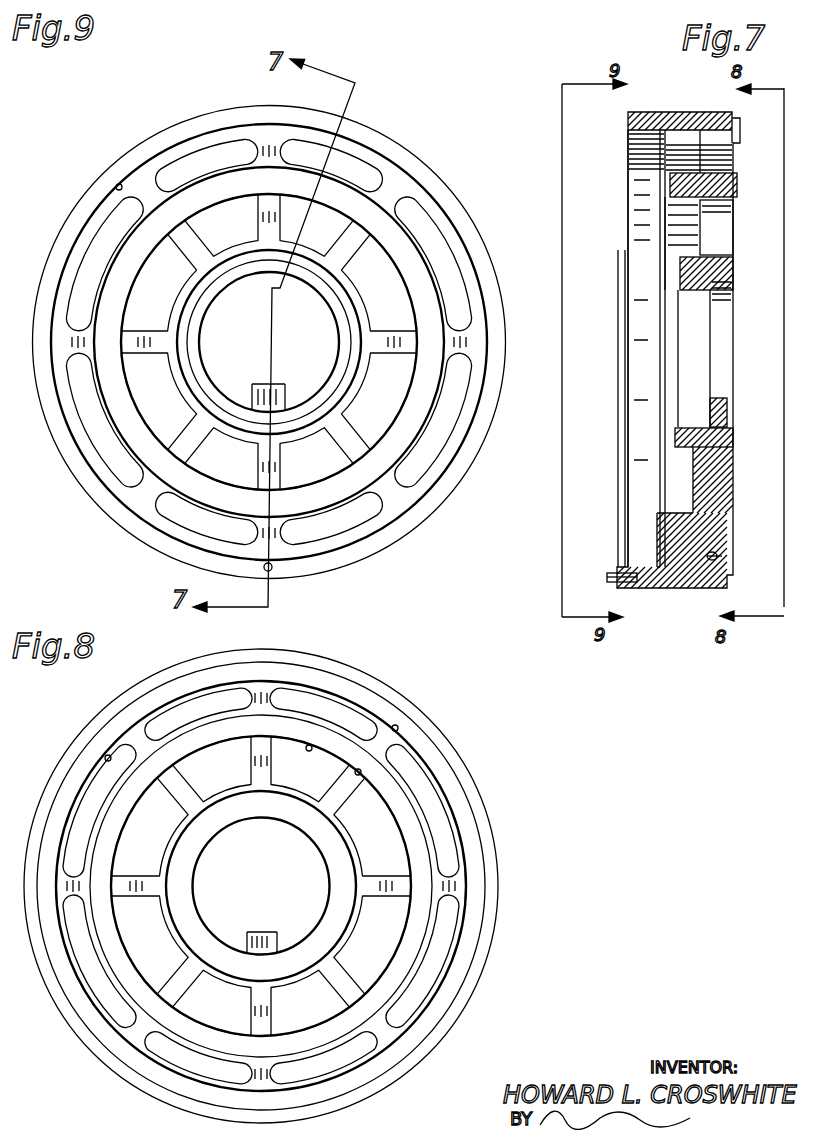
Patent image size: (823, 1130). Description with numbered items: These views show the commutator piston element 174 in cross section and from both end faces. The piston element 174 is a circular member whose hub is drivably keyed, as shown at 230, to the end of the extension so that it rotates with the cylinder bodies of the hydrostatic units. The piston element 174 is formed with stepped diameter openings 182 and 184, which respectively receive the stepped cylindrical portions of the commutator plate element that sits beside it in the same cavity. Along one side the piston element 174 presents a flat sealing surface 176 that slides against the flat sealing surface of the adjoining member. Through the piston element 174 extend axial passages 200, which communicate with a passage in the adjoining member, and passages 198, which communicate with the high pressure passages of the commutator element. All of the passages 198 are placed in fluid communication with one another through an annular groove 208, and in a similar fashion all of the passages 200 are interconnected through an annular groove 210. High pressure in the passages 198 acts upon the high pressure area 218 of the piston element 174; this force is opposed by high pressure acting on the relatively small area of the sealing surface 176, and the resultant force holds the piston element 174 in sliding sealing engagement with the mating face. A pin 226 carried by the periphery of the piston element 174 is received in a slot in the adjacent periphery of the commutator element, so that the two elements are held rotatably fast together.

In FIG. 9, the commutator piston element 174 is at (269, 342).
In FIG. 8, the commutator piston element 174 is at (256, 886).
In FIG. 7, the commutator piston element 174 is at (703, 122).
In FIG. 8, the sealing surface 176 is at (288, 886).
In FIG. 7, the sealing surface 176 is at (758, 128).
In FIG. 9, the stepped diameter opening 182 is at (300, 311).
In FIG. 7, the stepped diameter opening 182 is at (683, 195).
In FIG. 9, the stepped diameter opening 184 is at (76, 178).
In FIG. 7, the stepped diameter opening 184 is at (638, 148).
In FIG. 9, the high pressure passages 198 is at (268, 347).
In FIG. 8, the high pressure passages 198 is at (239, 886).
In FIG. 7, the high pressure passages 198 is at (722, 170).
In FIG. 9, the axial passages 200 is at (287, 342).
In FIG. 8, the axial passages 200 is at (261, 870).
In FIG. 7, the axial passages 200 is at (707, 243).
In FIG. 8, the annular groove 208 is at (286, 873).
In FIG. 7, the annular groove 208 is at (715, 556).
In FIG. 8, the annular groove 210 is at (313, 886).
In FIG. 7, the annular groove 210 is at (755, 498).
In FIG. 9, the high pressure area 218 is at (297, 339).
In FIG. 7, the high pressure area 218 is at (670, 182).
In FIG. 9, the pin 226 is at (312, 584).
In FIG. 7, the pin 226 is at (617, 572).
In FIG. 9, the key 230 is at (284, 370).
In FIG. 8, the key 230 is at (243, 919).
In FIG. 7, the key 230 is at (712, 398).